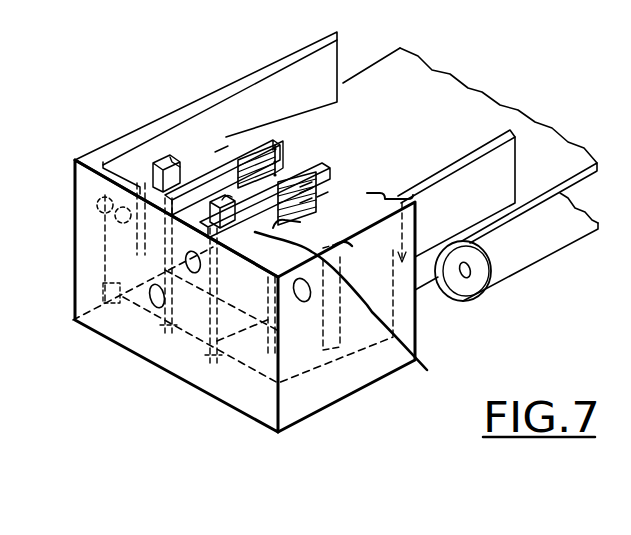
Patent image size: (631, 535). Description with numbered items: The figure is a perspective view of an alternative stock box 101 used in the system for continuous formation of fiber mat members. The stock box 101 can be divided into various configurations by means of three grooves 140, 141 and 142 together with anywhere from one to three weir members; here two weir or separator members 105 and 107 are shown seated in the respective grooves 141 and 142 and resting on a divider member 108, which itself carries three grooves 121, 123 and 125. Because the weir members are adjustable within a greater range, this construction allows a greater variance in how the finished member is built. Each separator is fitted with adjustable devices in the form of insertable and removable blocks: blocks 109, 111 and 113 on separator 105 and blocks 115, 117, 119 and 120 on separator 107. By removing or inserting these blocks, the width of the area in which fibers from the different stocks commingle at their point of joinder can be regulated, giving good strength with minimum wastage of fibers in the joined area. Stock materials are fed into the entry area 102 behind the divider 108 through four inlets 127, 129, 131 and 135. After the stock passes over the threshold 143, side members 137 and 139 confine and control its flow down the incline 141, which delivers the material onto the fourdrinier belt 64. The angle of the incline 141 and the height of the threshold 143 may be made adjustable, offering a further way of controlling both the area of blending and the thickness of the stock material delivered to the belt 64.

The fourdrinier belt 64 is at (535, 265).
The stock box 101 is at (357, 392).
The entry area 102 is at (140, 168).
The weir member 105 is at (222, 182).
The weir member 107 is at (330, 280).
The divider member 108 is at (165, 166).
The insertable and removable block 109 is at (275, 149).
The insertable and removable block 111 is at (276, 161).
The insertable and removable block 113 is at (276, 176).
The insertable and removable block 115 is at (300, 187).
The insertable and removable block 117 is at (300, 193).
The insertable and removable block 119 is at (317, 197).
The insertable and removable block 120 is at (300, 203).
The groove 121 is at (180, 172).
The groove 123 is at (245, 190).
The groove 125 is at (352, 246).
The inlet 127 is at (93, 217).
The inlet 129 is at (155, 304).
The inlet 131 is at (193, 274).
The inlet 135 is at (298, 302).
The side member 137 is at (325, 96).
The side member 139 is at (507, 181).
The groove 140 is at (75, 320).
The groove / incline 141 is at (413, 197).
The groove 142 is at (213, 362).
The threshold 143 is at (220, 150).